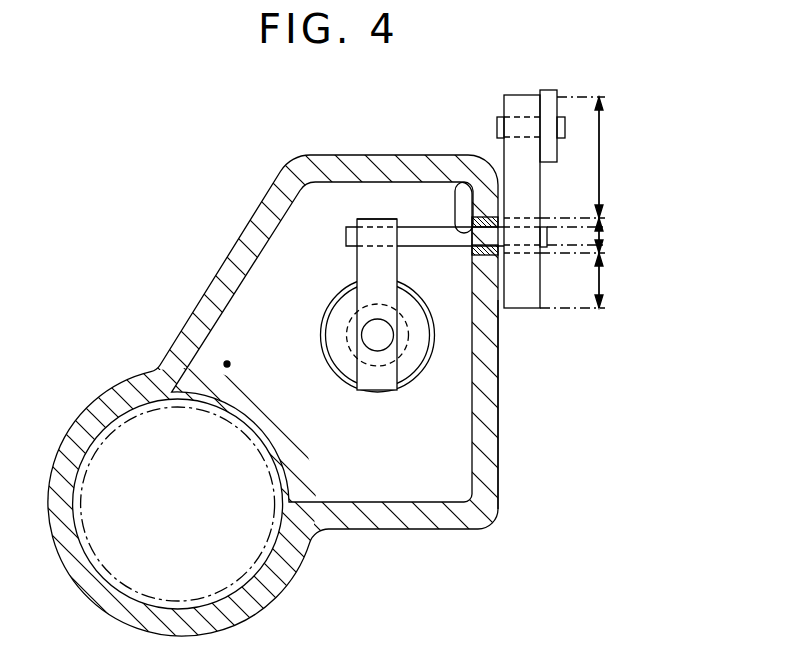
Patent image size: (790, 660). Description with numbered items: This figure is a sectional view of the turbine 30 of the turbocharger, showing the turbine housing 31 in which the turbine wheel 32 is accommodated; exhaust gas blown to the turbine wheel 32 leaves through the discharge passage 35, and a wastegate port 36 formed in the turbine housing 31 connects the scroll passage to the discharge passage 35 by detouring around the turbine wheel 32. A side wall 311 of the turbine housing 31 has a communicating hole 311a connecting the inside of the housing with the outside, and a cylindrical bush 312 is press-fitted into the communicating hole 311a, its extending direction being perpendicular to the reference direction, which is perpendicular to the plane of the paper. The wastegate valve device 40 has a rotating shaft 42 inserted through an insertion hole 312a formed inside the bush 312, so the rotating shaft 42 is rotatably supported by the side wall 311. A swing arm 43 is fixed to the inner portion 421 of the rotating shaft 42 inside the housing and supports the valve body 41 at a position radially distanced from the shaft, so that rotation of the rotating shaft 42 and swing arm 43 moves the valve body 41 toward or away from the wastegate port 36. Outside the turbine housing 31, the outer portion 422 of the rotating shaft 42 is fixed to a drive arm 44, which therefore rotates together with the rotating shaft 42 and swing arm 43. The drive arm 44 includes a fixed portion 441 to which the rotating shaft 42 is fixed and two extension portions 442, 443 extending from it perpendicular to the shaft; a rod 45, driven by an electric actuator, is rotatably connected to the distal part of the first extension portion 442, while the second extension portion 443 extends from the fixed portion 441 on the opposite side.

The turbine 30 is at (92, 147).
The turbine housing 31 is at (216, 264).
The turbine wheel 32 is at (118, 400).
The discharge passage 35 is at (224, 364).
The wastegate port 36 is at (345, 335).
The wastegate valve device 40 is at (313, 210).
The valve body 41 is at (341, 386).
The rotating shaft 42 is at (453, 228).
The swing arm 43 is at (370, 290).
The drive arm 44 is at (674, 150).
The rod 45 is at (547, 90).
The side wall 311 is at (490, 400).
The communicating hole 311a is at (468, 250).
The bush 312 is at (495, 260).
The insertion hole 312a is at (460, 192).
The inner portion 421 is at (366, 218).
The outer portion 422 is at (522, 224).
The fixed portion 441 is at (600, 237).
The first extension portion 442 is at (600, 157).
The second extension portion 443 is at (600, 279).